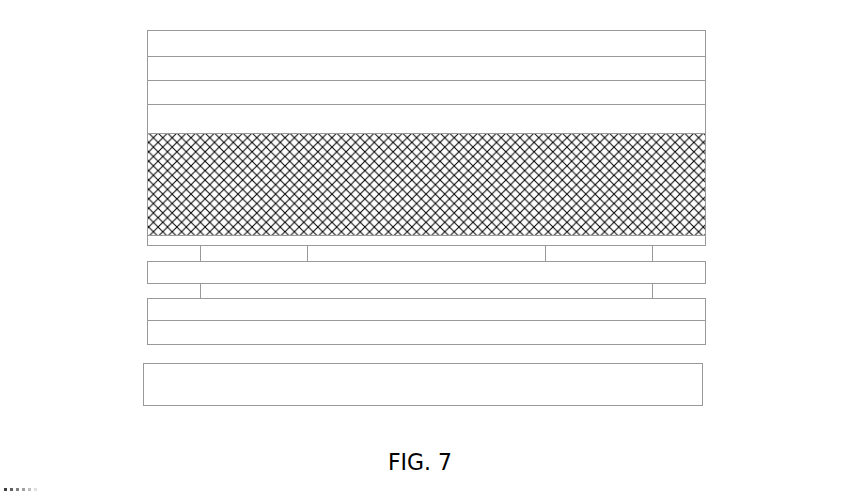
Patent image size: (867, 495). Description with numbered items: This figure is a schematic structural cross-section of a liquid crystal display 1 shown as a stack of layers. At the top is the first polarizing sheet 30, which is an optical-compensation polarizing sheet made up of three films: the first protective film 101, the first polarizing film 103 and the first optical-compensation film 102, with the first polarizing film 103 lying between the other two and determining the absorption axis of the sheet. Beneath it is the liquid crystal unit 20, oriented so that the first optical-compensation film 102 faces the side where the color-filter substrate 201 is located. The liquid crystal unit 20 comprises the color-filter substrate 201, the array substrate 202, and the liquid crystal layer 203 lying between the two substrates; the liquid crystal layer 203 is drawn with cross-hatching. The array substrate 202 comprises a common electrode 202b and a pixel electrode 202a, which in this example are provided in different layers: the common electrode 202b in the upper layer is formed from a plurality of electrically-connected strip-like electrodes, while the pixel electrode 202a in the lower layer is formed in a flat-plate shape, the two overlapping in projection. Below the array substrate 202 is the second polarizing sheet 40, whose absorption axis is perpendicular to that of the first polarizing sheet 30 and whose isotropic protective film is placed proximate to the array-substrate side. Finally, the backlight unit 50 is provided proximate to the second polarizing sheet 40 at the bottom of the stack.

The liquid crystal display 1 is at (415, 217).
The first polarizing sheet 30 is at (375, 68).
The first protective film 101 is at (188, 44).
The first polarizing film 103 is at (188, 70).
The first optical-compensation film 102 is at (188, 92).
The liquid crystal unit 20 is at (397, 214).
The color-filter substrate 201 is at (182, 122).
The liquid crystal layer 203 is at (148, 186).
The array substrate 202 is at (425, 280).
The common electrode 202b is at (220, 252).
The pixel electrode 202a is at (220, 306).
The second polarizing sheet 40 is at (213, 336).
The backlight unit 50 is at (401, 385).